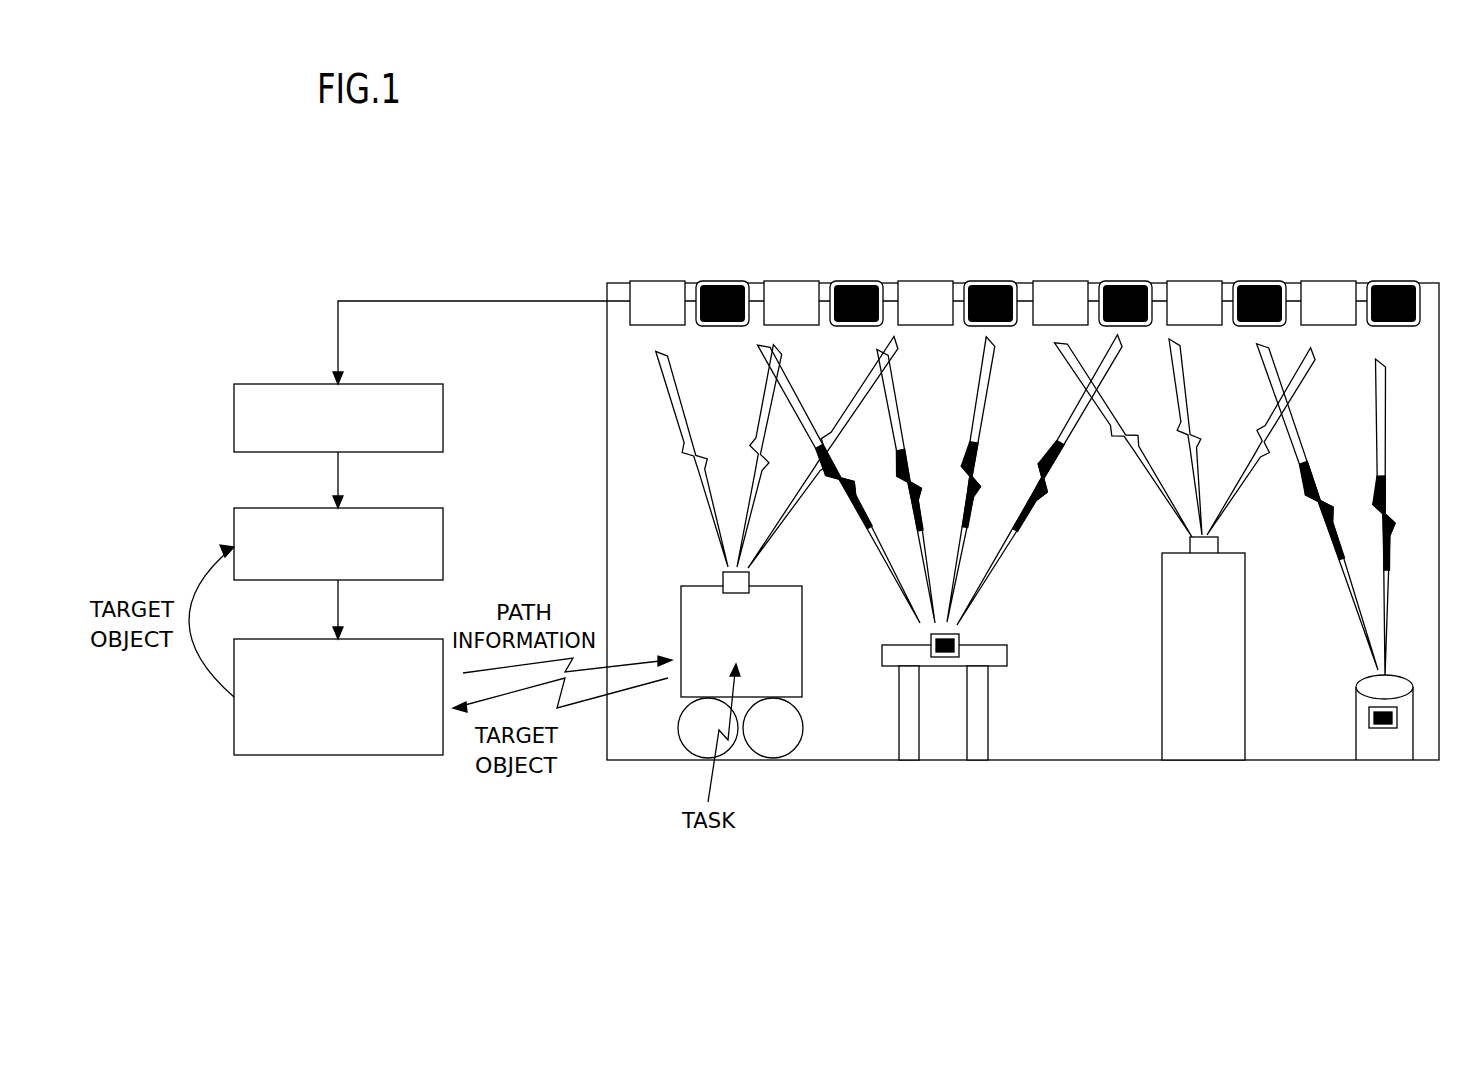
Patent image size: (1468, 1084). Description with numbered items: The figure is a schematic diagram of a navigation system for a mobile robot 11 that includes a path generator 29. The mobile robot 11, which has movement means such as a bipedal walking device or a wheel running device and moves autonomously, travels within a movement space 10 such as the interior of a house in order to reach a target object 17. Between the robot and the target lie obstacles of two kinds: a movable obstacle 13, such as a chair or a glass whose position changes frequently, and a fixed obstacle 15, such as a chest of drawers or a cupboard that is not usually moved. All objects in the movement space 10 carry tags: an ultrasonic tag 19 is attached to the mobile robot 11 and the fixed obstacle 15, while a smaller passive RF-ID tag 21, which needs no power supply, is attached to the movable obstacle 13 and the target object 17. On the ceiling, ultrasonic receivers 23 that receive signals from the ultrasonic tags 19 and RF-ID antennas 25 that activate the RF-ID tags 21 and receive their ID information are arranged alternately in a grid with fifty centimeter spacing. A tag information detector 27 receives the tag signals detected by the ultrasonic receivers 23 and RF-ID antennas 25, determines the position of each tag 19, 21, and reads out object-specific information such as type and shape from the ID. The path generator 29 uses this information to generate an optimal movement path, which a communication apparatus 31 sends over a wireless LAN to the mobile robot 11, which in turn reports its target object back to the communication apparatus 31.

The movement space 10 is at (1080, 760).
The mobile robot 11 is at (695, 586).
The movable obstacle 13 is at (992, 645).
The fixed obstacle 15 is at (1162, 610).
The target object 17 is at (1358, 693).
The ultrasonic tag 19 is at (732, 593).
The RF-ID tag 21 is at (947, 657).
The ultrasonic receiver 23 is at (658, 280).
The RF-ID antenna 25 is at (724, 280).
The tag information detector 27 is at (410, 384).
The path generator 29 is at (412, 508).
The communication apparatus 31 is at (382, 639).